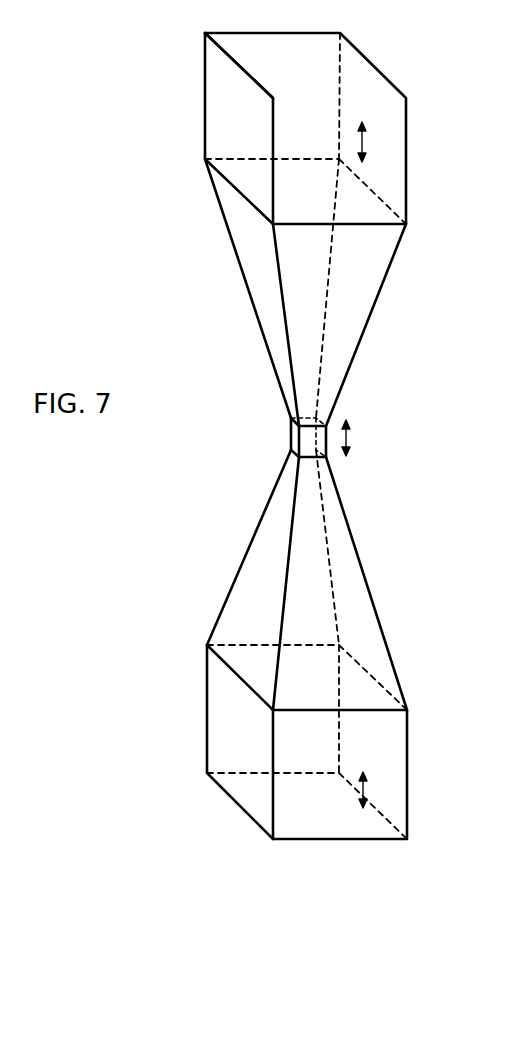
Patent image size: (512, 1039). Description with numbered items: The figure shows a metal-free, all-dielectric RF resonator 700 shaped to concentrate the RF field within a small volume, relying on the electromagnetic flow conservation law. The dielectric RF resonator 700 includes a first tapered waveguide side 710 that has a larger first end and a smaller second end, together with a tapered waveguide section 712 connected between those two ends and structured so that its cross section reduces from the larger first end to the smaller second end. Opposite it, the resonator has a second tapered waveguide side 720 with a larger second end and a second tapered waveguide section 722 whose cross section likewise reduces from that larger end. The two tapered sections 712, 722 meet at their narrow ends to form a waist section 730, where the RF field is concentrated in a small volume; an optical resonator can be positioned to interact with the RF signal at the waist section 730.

The dielectric RF resonator 700 is at (152, 456).
The first tapered waveguide side 710 is at (407, 757).
The tapered waveguide section 712 is at (363, 570).
The second tapered waveguide side 720 is at (405, 153).
The upper tapered section 722 is at (368, 320).
The waist section 730 is at (287, 430).